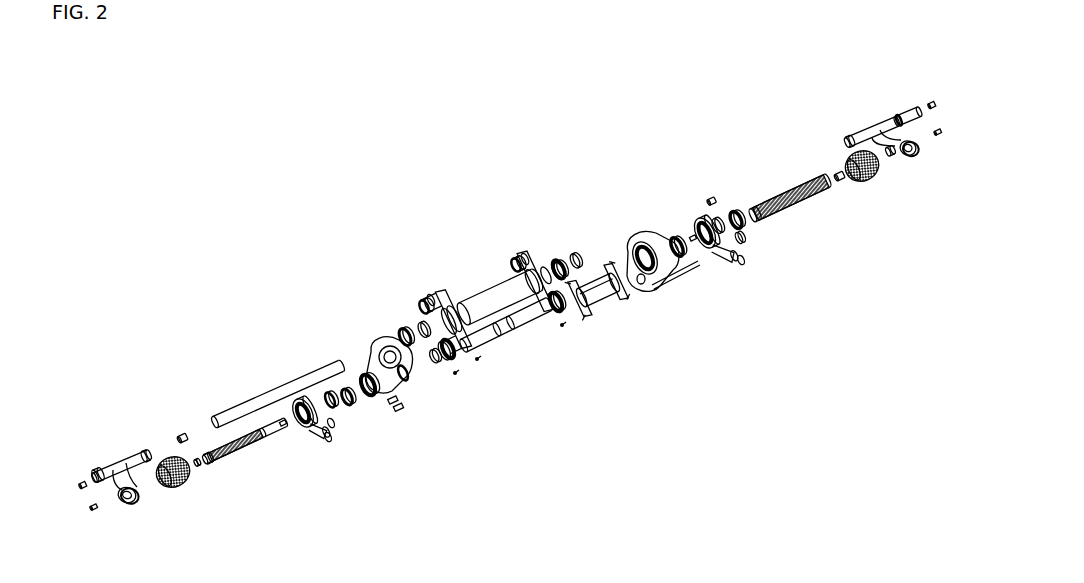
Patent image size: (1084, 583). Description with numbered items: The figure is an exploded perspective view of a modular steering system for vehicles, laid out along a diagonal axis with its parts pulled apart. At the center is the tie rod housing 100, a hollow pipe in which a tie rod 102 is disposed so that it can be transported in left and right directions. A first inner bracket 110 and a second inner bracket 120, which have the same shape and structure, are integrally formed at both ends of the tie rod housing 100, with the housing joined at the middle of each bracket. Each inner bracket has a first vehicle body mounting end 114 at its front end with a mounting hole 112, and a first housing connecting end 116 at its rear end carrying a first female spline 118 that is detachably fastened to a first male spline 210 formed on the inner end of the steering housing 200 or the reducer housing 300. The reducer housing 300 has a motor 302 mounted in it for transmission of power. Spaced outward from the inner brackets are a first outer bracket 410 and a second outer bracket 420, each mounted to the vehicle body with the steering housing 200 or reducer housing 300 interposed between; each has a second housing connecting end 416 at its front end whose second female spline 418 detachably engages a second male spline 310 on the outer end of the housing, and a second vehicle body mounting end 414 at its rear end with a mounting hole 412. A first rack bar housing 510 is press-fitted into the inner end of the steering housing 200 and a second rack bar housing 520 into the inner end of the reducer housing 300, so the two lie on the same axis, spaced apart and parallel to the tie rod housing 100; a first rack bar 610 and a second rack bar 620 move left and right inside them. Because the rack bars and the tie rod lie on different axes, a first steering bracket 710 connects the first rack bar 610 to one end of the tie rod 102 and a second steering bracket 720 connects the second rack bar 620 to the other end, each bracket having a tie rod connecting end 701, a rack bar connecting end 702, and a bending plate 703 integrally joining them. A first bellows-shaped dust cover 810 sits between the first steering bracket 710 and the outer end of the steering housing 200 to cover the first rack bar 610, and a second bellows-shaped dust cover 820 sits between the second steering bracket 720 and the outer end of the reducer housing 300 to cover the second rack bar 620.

The tie rod housing 100 is at (492, 298).
The tie rod 102 is at (254, 407).
The first inner bracket 110 is at (441, 297).
The mounting hole 112 is at (427, 298).
The first vehicle body mounting end 114 is at (420, 303).
The first housing connecting end 116 is at (572, 274).
The first female spline 118 is at (563, 327).
The second inner bracket 120 is at (538, 267).
The steering housing 200 is at (376, 345).
The first male spline 210 is at (651, 292).
The reducer housing 300 is at (641, 237).
The motor 302 is at (608, 308).
The second male spline 310 is at (676, 240).
The first outer bracket 410 is at (302, 442).
The mounting hole 412 is at (745, 240).
The second vehicle body mounting end 414 is at (742, 261).
The second housing connecting end 416 is at (716, 218).
The second female spline 418 is at (706, 252).
The second outer bracket 420 is at (531, 328).
The first rack bar housing 510 is at (493, 336).
The second rack bar housing 520 is at (552, 316).
The first rack bar 610 is at (222, 458).
The second rack bar 620 is at (790, 192).
The tie rod connecting end 701 is at (137, 450).
The rack bar connecting end 702 is at (124, 503).
The bending plate 703 is at (92, 472).
The first steering bracket 710 is at (123, 457).
The second steering bracket 720 is at (873, 125).
The first bellows-shaped dust cover 810 is at (177, 490).
The second bellows-shaped dust cover 820 is at (866, 182).